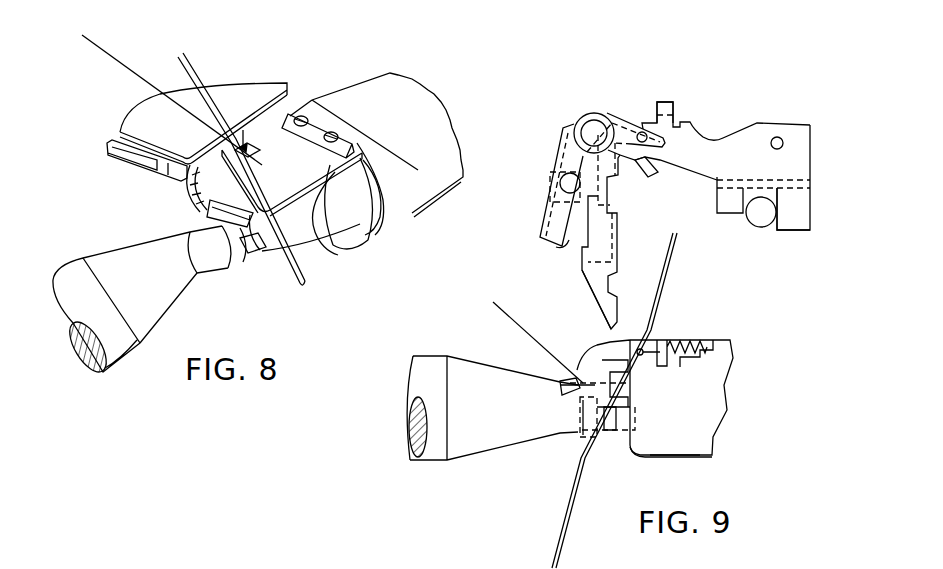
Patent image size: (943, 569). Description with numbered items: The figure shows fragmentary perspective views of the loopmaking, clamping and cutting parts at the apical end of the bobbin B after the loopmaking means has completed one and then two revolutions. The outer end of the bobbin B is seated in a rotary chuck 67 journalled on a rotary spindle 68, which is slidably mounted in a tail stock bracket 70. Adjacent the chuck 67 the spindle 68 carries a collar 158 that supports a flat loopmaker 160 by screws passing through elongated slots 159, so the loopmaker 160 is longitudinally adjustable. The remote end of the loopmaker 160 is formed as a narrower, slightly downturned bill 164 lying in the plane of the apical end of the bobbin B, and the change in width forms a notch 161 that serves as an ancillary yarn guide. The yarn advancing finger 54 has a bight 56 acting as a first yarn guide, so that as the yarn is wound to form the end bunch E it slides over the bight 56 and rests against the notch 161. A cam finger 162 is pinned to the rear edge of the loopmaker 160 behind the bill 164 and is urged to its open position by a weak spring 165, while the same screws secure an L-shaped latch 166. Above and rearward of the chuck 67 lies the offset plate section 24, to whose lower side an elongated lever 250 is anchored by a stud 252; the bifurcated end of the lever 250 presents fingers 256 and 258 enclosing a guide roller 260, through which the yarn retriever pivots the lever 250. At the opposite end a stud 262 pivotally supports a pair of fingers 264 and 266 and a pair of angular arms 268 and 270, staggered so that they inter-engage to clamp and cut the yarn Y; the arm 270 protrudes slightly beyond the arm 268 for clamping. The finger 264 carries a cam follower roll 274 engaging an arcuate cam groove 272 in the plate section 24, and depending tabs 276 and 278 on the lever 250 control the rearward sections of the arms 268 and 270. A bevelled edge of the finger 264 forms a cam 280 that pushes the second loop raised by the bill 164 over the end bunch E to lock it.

In FIG. 8, the plate section 24 is at (226, 93).
In FIG. 8, the yarn advancing finger 54 is at (306, 279).
In FIG. 9, the yarn advancing finger 54 is at (568, 525).
In FIG. 8, the bight 56 is at (235, 153).
In FIG. 9, the bight 56 is at (612, 416).
In FIG. 8, the rotary chuck 67 is at (313, 222).
In FIG. 9, the rotary chuck 67 is at (664, 454).
In FIG. 8, the rotary spindle 68 is at (379, 192).
In FIG. 8, the tail stock bracket 70 is at (449, 203).
In FIG. 8, the collar 158 is at (361, 213).
In FIG. 8, the elongated slots 159 is at (297, 114).
In FIG. 8, the loopmaker 160 is at (284, 140).
In FIG. 9, the loopmaker 160 is at (702, 387).
In FIG. 8, the notch 161 is at (202, 205).
In FIG. 9, the notch 161 is at (586, 386).
In FIG. 8, the cam finger 162 is at (190, 190).
In FIG. 9, the cam finger 162 is at (600, 347).
In FIG. 8, the bill 164 is at (252, 249).
In FIG. 9, the bill 164 is at (582, 414).
In FIG. 8, the spring 165 is at (244, 142).
In FIG. 9, the spring 165 is at (678, 346).
In FIG. 8, the L-shaped latch 166 is at (346, 140).
In FIG. 9, the elongated lever 250 is at (697, 123).
In FIG. 9, the stud 252 is at (775, 137).
In FIG. 9, the finger 256 is at (793, 231).
In FIG. 9, the finger 258 is at (732, 204).
In FIG. 9, the guide roller 260 is at (759, 230).
In FIG. 9, the stud 262 is at (592, 130).
In FIG. 9, the finger 264 is at (582, 269).
In FIG. 9, the finger 266 is at (608, 207).
In FIG. 9, the angular arm 268 is at (546, 215).
In FIG. 9, the angular arm 270 is at (562, 250).
In FIG. 8, the cam groove 272 is at (150, 157).
In FIG. 9, the cam follower roll 274 is at (559, 183).
In FIG. 9, the depending tab 276 is at (662, 104).
In FIG. 9, the depending tab 278 is at (650, 176).
In FIG. 9, the cam 280 is at (591, 290).
In FIG. 8, the yarn Y is at (108, 52).
In FIG. 9, the yarn Y is at (502, 312).
In FIG. 8, the end bunch E is at (187, 228).
In FIG. 9, the end bunch E is at (580, 371).
In FIG. 8, the bobbin B is at (207, 265).
In FIG. 9, the bobbin B is at (488, 453).